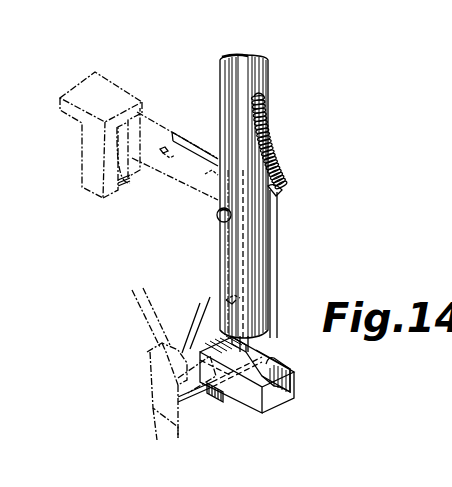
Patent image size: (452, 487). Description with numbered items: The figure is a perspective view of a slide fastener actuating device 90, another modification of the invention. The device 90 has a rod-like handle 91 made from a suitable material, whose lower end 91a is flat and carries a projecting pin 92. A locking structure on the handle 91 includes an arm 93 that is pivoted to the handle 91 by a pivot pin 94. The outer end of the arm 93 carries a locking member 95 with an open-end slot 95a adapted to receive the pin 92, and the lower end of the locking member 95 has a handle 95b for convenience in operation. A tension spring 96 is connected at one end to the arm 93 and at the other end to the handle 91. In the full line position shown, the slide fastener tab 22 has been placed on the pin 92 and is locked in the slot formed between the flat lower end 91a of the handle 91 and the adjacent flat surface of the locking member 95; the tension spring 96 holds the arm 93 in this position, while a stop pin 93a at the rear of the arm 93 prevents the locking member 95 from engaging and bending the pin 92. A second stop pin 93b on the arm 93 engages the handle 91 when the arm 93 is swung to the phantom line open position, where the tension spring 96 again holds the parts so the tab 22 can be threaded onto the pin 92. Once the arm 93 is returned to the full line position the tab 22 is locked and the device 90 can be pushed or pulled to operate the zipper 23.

The slide fastener actuating device 90 is at (160, 58).
The rod-like handle 91 is at (258, 80).
The lower end of the handle 91a is at (208, 326).
The pin 92 is at (269, 331).
The arm 93 is at (172, 184).
The stop pin 93a is at (160, 148).
The second stop pin 93b is at (208, 183).
The pivot pin 94 is at (218, 220).
The locking member 95 is at (295, 368).
The open-end slot 95a is at (284, 396).
The handle 95b is at (222, 403).
The tension spring 96 is at (280, 184).
The slide fastener tab 22 is at (192, 401).
The zipper 23 is at (150, 350).